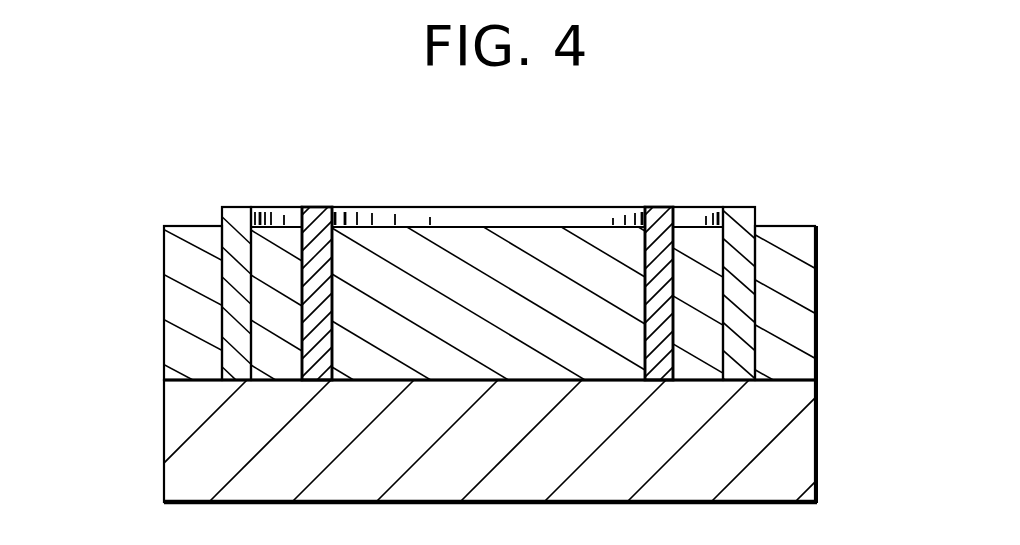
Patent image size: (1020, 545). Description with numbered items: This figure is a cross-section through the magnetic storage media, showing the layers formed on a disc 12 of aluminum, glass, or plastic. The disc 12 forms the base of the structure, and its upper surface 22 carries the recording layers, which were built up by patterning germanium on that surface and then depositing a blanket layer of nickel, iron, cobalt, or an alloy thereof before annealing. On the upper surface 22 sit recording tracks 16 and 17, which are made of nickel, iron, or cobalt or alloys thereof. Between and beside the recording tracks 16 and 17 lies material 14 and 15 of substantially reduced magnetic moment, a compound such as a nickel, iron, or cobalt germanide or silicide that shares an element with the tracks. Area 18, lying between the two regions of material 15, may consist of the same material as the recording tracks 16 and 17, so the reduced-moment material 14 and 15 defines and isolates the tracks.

The disc 12 is at (818, 453).
The upper surface 22 is at (773, 378).
The recording track 16 is at (192, 225).
The material of reduced magnetic moment 14 is at (247, 208).
The recording track 17 is at (273, 225).
The material of reduced magnetic moment 15 is at (318, 208).
The area 18 is at (518, 226).